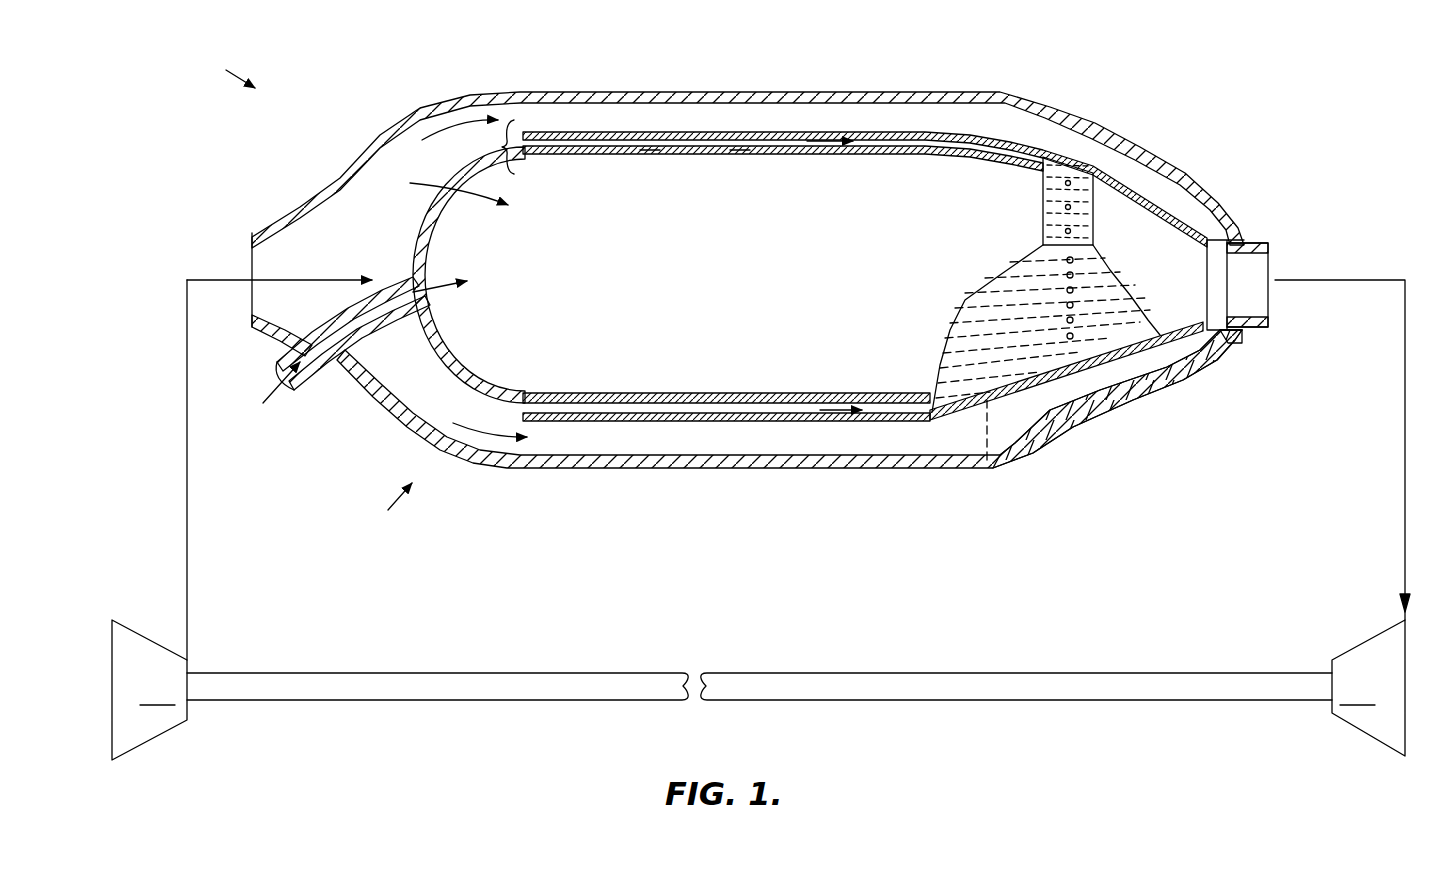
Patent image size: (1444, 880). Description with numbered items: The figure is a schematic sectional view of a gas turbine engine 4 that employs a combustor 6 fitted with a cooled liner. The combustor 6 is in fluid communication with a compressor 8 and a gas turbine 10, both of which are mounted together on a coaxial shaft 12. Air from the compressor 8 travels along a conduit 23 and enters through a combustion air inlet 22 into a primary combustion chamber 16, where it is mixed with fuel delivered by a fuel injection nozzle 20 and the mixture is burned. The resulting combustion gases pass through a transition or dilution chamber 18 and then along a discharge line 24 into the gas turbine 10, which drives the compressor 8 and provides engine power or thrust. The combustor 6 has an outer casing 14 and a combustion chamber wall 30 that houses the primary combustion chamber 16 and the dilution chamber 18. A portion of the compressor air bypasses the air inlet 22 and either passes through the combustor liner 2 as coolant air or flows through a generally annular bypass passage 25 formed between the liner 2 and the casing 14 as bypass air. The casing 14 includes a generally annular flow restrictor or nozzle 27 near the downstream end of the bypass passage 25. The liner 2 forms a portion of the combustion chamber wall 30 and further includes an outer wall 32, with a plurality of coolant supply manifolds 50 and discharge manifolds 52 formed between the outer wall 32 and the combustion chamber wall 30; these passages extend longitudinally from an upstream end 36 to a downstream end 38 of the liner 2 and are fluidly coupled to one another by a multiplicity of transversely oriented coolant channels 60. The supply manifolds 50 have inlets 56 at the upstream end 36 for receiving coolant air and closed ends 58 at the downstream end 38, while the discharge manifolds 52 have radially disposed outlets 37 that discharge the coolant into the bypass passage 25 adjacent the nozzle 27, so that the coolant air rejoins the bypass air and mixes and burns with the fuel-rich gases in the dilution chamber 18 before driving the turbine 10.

The combustor liner 2 is at (504, 140).
The gas turbine engine 4 is at (226, 69).
The combustor 6 is at (386, 507).
The compressor 8 is at (122, 624).
The gas turbine 10 is at (1407, 628).
The coaxial shaft 12 is at (882, 673).
The outer casing 14 is at (486, 92).
The primary combustion chamber 16 is at (782, 285).
The transition or dilution chamber 18 is at (1270, 268).
The fuel injection nozzle 20 is at (337, 315).
The combustion air inlet 22 is at (437, 190).
The conduit 23 is at (187, 488).
The discharge line 24 is at (1405, 488).
The annular bypass passage 25 is at (557, 120).
The flow restrictor or nozzle 27 is at (1078, 418).
The combustion chamber wall 30 is at (740, 152).
The outer wall 32 is at (594, 132).
The upstream end 36 is at (538, 156).
The outlets 37 is at (1080, 270).
The downstream end 38 is at (1228, 224).
The coolant supply manifolds 50 is at (915, 143).
The coolant discharge manifolds 52 is at (987, 283).
The inlets 56 is at (512, 406).
The closed ends 58 is at (1240, 342).
The coolant channels 60 is at (647, 155).